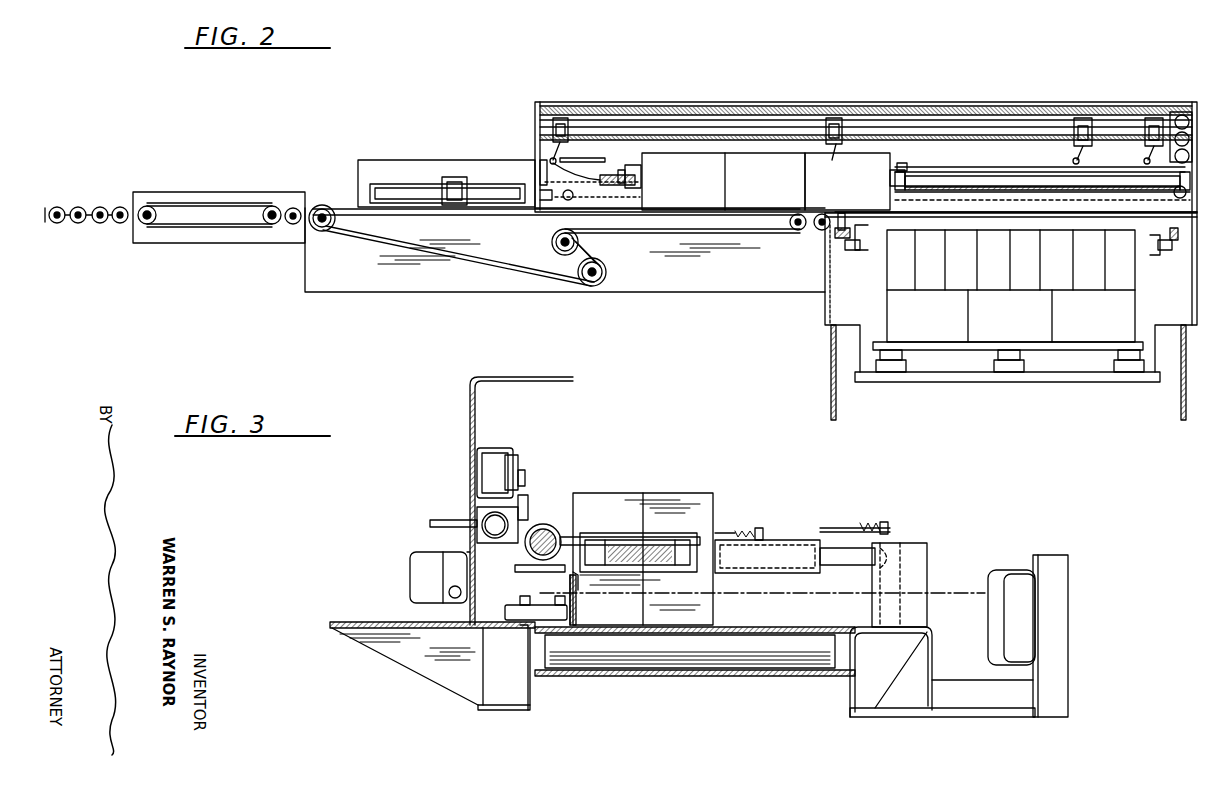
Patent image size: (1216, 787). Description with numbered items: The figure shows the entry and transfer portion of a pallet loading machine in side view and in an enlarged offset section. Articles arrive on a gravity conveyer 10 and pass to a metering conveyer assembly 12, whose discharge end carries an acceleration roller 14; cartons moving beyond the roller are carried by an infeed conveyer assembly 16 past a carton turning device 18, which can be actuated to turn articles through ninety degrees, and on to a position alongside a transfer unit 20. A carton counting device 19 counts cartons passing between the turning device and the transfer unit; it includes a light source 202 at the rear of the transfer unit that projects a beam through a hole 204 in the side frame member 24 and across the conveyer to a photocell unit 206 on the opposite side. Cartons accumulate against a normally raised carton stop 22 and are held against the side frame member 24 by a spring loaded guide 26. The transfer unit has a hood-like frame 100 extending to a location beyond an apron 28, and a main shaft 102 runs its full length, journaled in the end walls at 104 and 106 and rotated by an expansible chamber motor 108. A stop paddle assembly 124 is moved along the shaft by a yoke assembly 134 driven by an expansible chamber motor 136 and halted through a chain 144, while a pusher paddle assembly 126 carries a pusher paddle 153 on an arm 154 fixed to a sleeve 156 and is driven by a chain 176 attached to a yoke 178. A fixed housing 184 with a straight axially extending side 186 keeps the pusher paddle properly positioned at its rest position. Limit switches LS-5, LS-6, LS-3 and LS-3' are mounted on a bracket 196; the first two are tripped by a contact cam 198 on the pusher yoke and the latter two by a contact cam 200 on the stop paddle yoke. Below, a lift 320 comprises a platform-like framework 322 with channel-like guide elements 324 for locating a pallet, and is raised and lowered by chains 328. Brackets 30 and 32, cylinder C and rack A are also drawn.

In FIG. 2, the gravity conveyer 10 is at (88, 204).
In FIG. 2, the metering conveyer assembly 12 is at (200, 205).
In FIG. 2, the acceleration roller 14 is at (293, 207).
In FIG. 2, the infeed conveyer assembly 16 is at (366, 238).
In FIG. 3, the infeed conveyer assembly 16 is at (720, 636).
In FIG. 2, the carton turning device 18 is at (443, 172).
In FIG. 2, the transfer unit 20 is at (648, 122).
In FIG. 2, the carton stop 22 is at (818, 231).
In FIG. 2, the side frame member 24 is at (640, 198).
In FIG. 3, the side frame member 24 is at (578, 620).
In FIG. 3, the spring loaded guide 26 is at (780, 545).
In FIG. 2, the apron 28 is at (945, 219).
In FIG. 2, the bracket 30 is at (868, 250).
In FIG. 2, the bracket 32 is at (1160, 255).
In FIG. 2, the hood-like frame 100 is at (742, 108).
In FIG. 3, the hood-like frame 100 is at (468, 394).
In FIG. 2, the main shaft 102 is at (976, 172).
In FIG. 3, the main shaft 102 is at (549, 532).
In FIG. 2, the journal 104 is at (540, 168).
In FIG. 2, the journal 106 is at (1170, 185).
In FIG. 2, the expansible chamber motor 108 is at (1184, 115).
In FIG. 2, the stop paddle assembly 124 is at (890, 180).
In FIG. 2, the pusher paddle assembly 126 is at (642, 178).
In FIG. 3, the pusher paddle assembly 126 is at (610, 488).
In FIG. 3, the yoke assembly 134 is at (574, 575).
In FIG. 3, the expansible chamber motor 136 is at (472, 518).
In FIG. 2, the chain 144 is at (1027, 186).
In FIG. 3, the chain 144 is at (558, 596).
In FIG. 3, the pusher paddle 153 is at (644, 560).
In FIG. 3, the arm 154 is at (625, 540).
In FIG. 3, the sleeve 156 is at (566, 540).
In FIG. 3, the chain 176 is at (523, 596).
In FIG. 3, the yoke 178 is at (522, 566).
In FIG. 2, the fixed housing 184 is at (558, 175).
In FIG. 2, the straight axially extending side 186 is at (600, 158).
In FIG. 2, the bracket 196 is at (930, 132).
In FIG. 3, the bracket 196 is at (498, 448).
In FIG. 3, the contact cam 198 is at (528, 512).
In FIG. 2, the contact cam 200 is at (906, 165).
In FIG. 3, the light source 202 is at (410, 585).
In FIG. 2, the hole 204 is at (566, 201).
In FIG. 3, the hole 204 is at (570, 605).
In FIG. 3, the photocell unit 206 is at (1005, 572).
In FIG. 3, the carton counting device 19 is at (946, 592).
In FIG. 2, the lift 320 is at (1030, 384).
In FIG. 2, the platform-like framework 322 is at (1066, 383).
In FIG. 2, the channel-like guide elements 324 is at (905, 370).
In FIG. 2, the chains 328 is at (836, 408).
In FIG. 2, the limit switch LS-5 is at (560, 118).
In FIG. 3, the limit switch LS-5 is at (524, 472).
In FIG. 2, the limit switch LS-6 is at (836, 118).
In FIG. 2, the limit switch LS-3 is at (1080, 121).
In FIG. 2, the limit switch LS-3' is at (1148, 121).
In FIG. 2, the cylinder C is at (723, 181).
In FIG. 2, the article rack A is at (1011, 286).